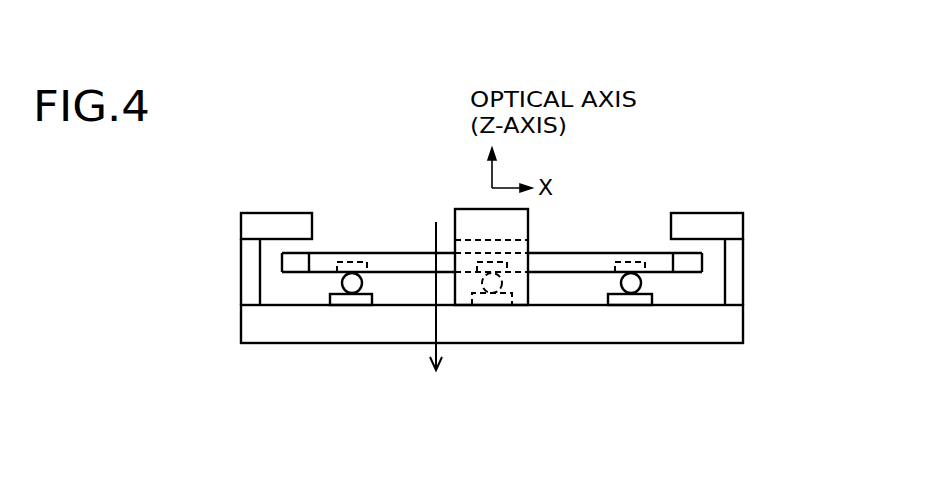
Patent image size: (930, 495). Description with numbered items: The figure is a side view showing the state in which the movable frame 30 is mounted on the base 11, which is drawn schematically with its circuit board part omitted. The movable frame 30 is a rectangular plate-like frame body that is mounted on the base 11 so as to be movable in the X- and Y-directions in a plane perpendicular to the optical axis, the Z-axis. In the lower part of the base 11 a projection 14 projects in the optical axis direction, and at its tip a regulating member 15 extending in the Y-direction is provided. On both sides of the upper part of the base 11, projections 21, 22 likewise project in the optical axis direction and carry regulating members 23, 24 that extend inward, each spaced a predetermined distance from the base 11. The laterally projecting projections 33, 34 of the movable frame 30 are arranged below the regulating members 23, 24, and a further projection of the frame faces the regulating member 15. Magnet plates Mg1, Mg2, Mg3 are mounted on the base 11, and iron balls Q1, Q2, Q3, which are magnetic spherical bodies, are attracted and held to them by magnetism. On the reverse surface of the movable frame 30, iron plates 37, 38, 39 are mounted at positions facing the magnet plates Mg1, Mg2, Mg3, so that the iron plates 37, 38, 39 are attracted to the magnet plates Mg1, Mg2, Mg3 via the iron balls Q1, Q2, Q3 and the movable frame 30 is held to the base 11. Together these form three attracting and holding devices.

The base 11 is at (743, 314).
The projection 14 is at (530, 282).
The regulating member 15 is at (464, 208).
The projection 21 is at (250, 277).
The projection 22 is at (733, 273).
The regulating member 23 is at (275, 213).
The regulating member 24 is at (707, 213).
The movable frame 30 is at (389, 253).
The projection 33 is at (290, 263).
The projection 34 is at (700, 262).
The iron plate 37 is at (508, 268).
The iron plate 38 is at (349, 262).
The iron plate 39 is at (633, 262).
The iron ball Q1 is at (484, 276).
The iron ball Q2 is at (341, 279).
The iron ball Q3 is at (647, 282).
The magnet plate Mg1 is at (495, 300).
The magnet plate Mg2 is at (355, 307).
The magnet plate Mg3 is at (632, 305).